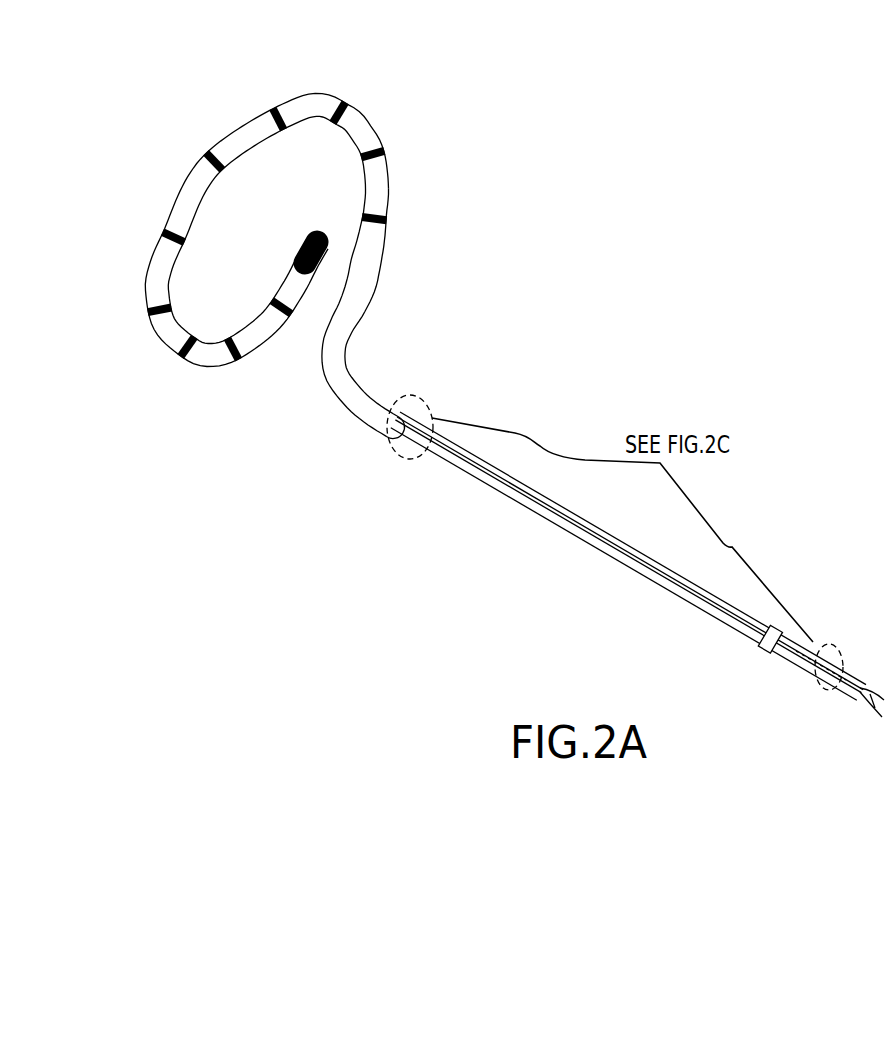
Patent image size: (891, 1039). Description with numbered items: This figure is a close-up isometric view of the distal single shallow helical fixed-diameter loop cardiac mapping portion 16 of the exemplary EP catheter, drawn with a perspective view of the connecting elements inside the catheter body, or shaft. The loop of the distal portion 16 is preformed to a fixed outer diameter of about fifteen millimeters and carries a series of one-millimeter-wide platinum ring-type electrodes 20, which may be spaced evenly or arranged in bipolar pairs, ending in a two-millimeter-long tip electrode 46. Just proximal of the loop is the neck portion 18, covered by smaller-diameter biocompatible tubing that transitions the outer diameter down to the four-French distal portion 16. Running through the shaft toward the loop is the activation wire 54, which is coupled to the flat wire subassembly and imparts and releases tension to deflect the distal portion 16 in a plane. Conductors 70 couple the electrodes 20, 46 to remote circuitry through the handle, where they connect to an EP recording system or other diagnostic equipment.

The distal single shallow helical fixed-diameter loop cardiac mapping portion 16 is at (388, 77).
The neck portion 18 is at (322, 425).
The electrodes 20 is at (272, 98).
The tip electrode 46 is at (313, 236).
The activation wire 54 is at (565, 521).
The conductors 70 is at (867, 716).